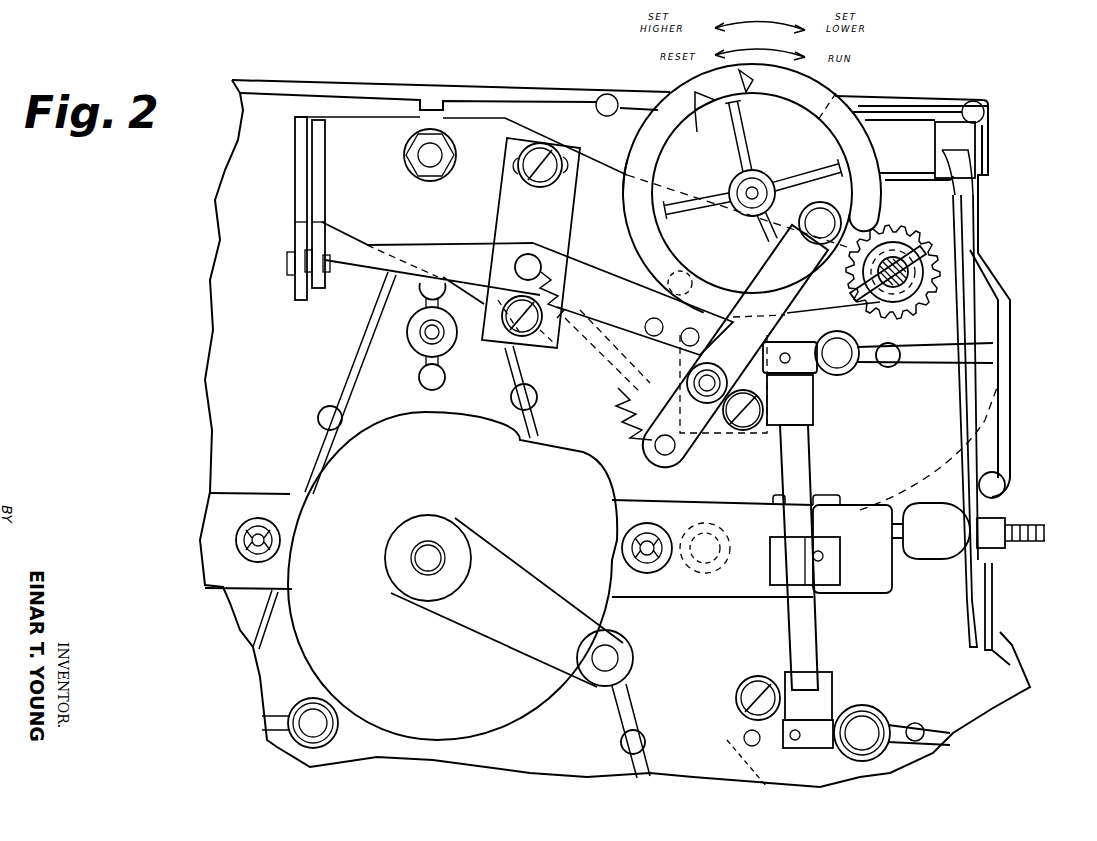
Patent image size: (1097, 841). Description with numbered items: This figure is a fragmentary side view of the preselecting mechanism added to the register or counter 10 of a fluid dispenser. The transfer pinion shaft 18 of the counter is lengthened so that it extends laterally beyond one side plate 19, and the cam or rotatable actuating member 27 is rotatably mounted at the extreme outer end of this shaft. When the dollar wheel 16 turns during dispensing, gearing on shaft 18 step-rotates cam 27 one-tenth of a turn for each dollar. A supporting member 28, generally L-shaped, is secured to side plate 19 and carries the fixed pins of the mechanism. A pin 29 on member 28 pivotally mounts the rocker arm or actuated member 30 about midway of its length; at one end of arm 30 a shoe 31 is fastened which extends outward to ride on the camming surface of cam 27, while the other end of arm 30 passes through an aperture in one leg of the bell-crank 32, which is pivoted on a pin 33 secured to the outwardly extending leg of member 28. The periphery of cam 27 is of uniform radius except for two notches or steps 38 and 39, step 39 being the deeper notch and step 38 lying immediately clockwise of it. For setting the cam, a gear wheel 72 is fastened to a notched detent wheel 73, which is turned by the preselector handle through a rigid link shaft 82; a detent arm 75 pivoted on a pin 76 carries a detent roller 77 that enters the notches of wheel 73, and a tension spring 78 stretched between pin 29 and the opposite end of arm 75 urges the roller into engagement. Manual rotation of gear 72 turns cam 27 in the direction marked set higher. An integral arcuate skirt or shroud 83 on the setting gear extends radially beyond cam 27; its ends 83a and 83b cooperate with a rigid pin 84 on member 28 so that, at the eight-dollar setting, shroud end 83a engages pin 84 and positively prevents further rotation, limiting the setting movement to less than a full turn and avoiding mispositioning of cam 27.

The register or counter 10 is at (1015, 393).
The dollar wheel 16 is at (977, 437).
The transfer pinion shaft 18 is at (757, 187).
The side plate 19 is at (957, 97).
The cam or rotatable actuating member 27 is at (873, 144).
The supporting member 28 is at (298, 198).
The pin 29 is at (530, 256).
The rocker arm or actuated member 30 is at (447, 244).
The shoe 31 is at (652, 300).
The bell-crank 32 is at (320, 163).
The pin 33 is at (303, 298).
The step 38 is at (748, 84).
The step 39 is at (700, 123).
The gear wheel 72 is at (918, 243).
The notched detent wheel 73 is at (966, 292).
The detent arm 75 is at (695, 440).
The pin 76 is at (698, 382).
The detent roller 77 is at (818, 202).
The tension spring 78 is at (605, 380).
The rigid link shaft 82 is at (905, 300).
The arcuate skirt or shroud 83 is at (749, 187).
The shroud end 83a is at (626, 176).
The shroud end 83b is at (836, 93).
The pin 84 is at (686, 268).